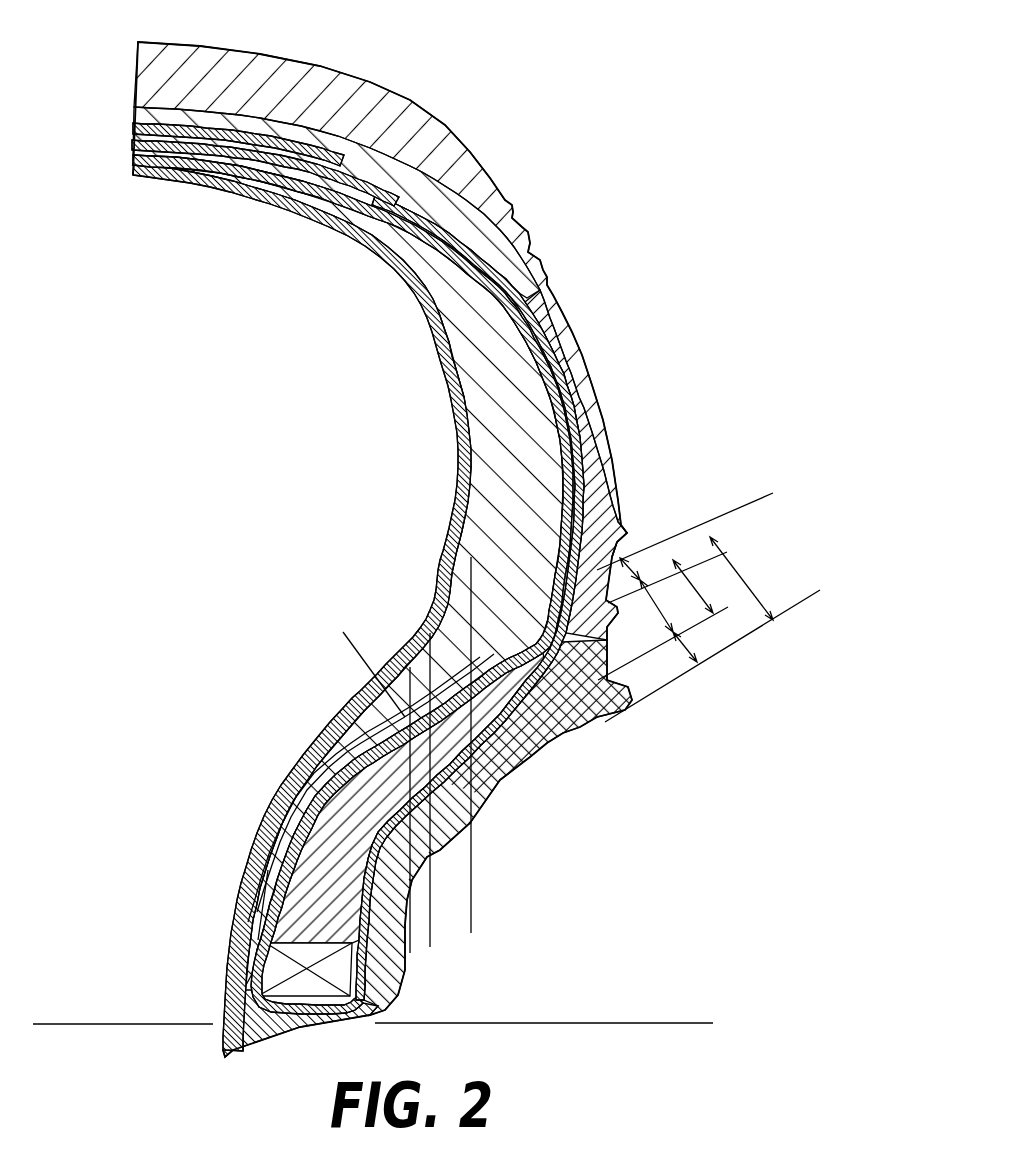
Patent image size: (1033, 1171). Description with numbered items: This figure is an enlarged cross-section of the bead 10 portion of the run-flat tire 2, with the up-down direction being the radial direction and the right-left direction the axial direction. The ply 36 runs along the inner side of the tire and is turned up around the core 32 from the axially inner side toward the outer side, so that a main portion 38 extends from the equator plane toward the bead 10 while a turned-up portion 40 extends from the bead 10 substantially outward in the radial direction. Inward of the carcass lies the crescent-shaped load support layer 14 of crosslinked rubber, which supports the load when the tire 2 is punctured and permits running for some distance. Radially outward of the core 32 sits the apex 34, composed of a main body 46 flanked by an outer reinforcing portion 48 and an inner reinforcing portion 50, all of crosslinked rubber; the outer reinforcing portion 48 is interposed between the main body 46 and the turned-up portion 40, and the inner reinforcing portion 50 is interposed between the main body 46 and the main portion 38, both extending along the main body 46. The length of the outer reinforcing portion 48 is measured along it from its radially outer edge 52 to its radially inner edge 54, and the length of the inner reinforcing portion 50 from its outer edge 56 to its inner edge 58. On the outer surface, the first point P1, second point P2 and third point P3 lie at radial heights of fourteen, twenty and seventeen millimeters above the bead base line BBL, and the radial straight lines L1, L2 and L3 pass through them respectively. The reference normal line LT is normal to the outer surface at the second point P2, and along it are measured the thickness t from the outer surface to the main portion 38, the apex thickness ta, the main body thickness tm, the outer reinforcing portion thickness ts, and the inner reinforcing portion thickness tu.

The tire 2 is at (646, 102).
The bead 10 is at (245, 912).
The load support layer 14 is at (482, 386).
The core 32 is at (387, 978).
The apex 34 is at (401, 829).
The ply 36 is at (434, 584).
The main portion 38 is at (303, 817).
The turned-up portion 40 is at (605, 727).
The main body 46 is at (277, 935).
The outer reinforcing portion 48 is at (573, 727).
The inner reinforcing portion 50 is at (300, 768).
The outer edge of the outer reinforcing portion 52 is at (627, 552).
The inner edge of the outer reinforcing portion 54 is at (390, 951).
The outer edge of the inner reinforcing portion 56 is at (470, 460).
The inner edge of the inner reinforcing portion 58 is at (282, 880).
The solid line L1 is at (410, 690).
The solid line L2 is at (468, 640).
The solid line L3 is at (430, 655).
The reference normal line LT is at (348, 655).
The first point P1 is at (410, 880).
The second point P2 is at (470, 823).
The third point P3 is at (430, 853).
The thickness t is at (741, 578).
The thickness ta is at (697, 586).
The thickness tm is at (668, 606).
The thickness ts is at (688, 640).
The thickness tu is at (640, 575).
The bead base line BBL is at (62, 1025).